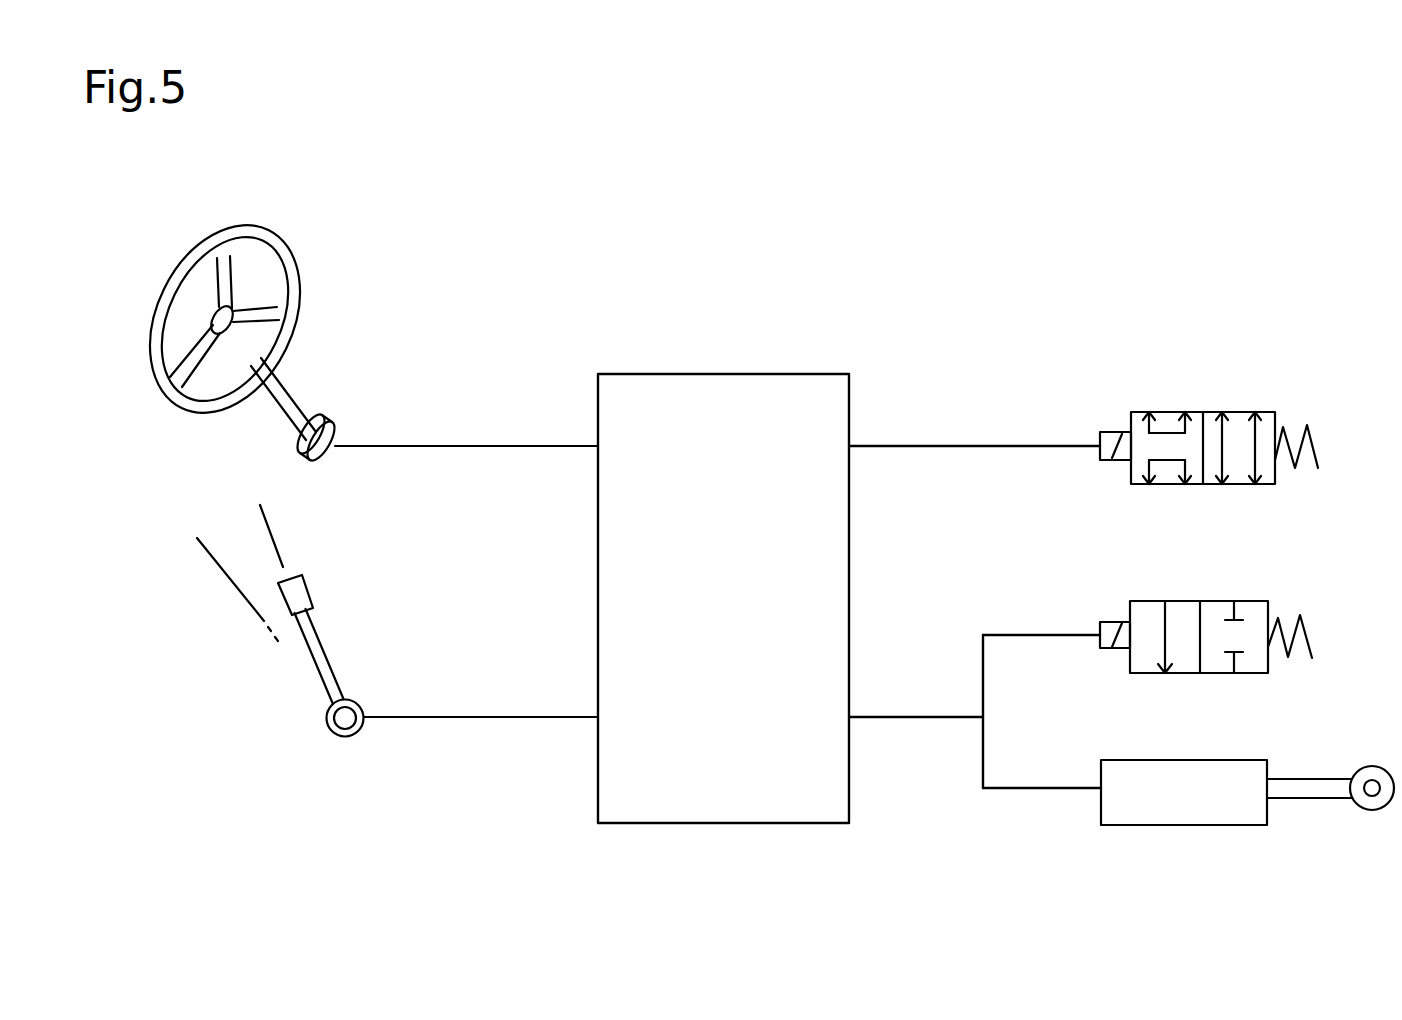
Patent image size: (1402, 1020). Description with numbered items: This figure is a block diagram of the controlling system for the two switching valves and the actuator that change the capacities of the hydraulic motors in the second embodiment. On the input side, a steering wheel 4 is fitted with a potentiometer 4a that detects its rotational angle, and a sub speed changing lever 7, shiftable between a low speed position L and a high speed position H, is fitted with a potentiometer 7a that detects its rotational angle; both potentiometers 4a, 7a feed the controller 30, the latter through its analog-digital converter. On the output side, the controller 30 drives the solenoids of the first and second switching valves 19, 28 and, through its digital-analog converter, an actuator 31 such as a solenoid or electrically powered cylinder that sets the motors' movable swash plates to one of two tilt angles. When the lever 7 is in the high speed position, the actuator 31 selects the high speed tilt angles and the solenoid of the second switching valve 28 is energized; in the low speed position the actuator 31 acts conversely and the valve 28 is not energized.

The steering wheel 4 is at (298, 252).
The potentiometer 4a is at (330, 418).
The sub speed changing lever 7 is at (312, 613).
The potentiometer 7a is at (362, 703).
The first switching valve 19 is at (1133, 412).
The second switching valve 28 is at (1138, 601).
The controller 30 is at (726, 625).
The actuator 31 is at (1104, 760).